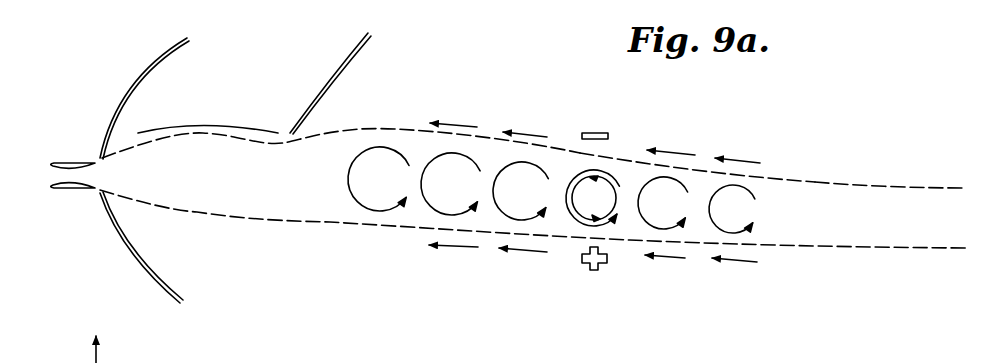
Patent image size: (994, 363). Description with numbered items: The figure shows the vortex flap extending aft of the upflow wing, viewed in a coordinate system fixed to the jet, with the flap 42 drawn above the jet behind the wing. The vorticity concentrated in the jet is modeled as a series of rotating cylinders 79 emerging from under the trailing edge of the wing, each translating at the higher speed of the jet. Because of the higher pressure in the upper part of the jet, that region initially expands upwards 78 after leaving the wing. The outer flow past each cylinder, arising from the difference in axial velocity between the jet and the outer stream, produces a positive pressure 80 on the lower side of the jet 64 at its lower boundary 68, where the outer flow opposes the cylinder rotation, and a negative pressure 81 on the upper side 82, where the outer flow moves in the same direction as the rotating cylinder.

The flap plate 42 is at (170, 121).
The lower side of the jet 64 is at (818, 180).
The lower boundary of the jet 68 is at (375, 227).
The upward expansion of the jet 78 is at (345, 131).
The rotating cylinder 79 is at (463, 158).
The positive pressure 80 is at (595, 270).
The negative pressure 81 is at (590, 133).
The upper side of the jet 82 is at (765, 177).